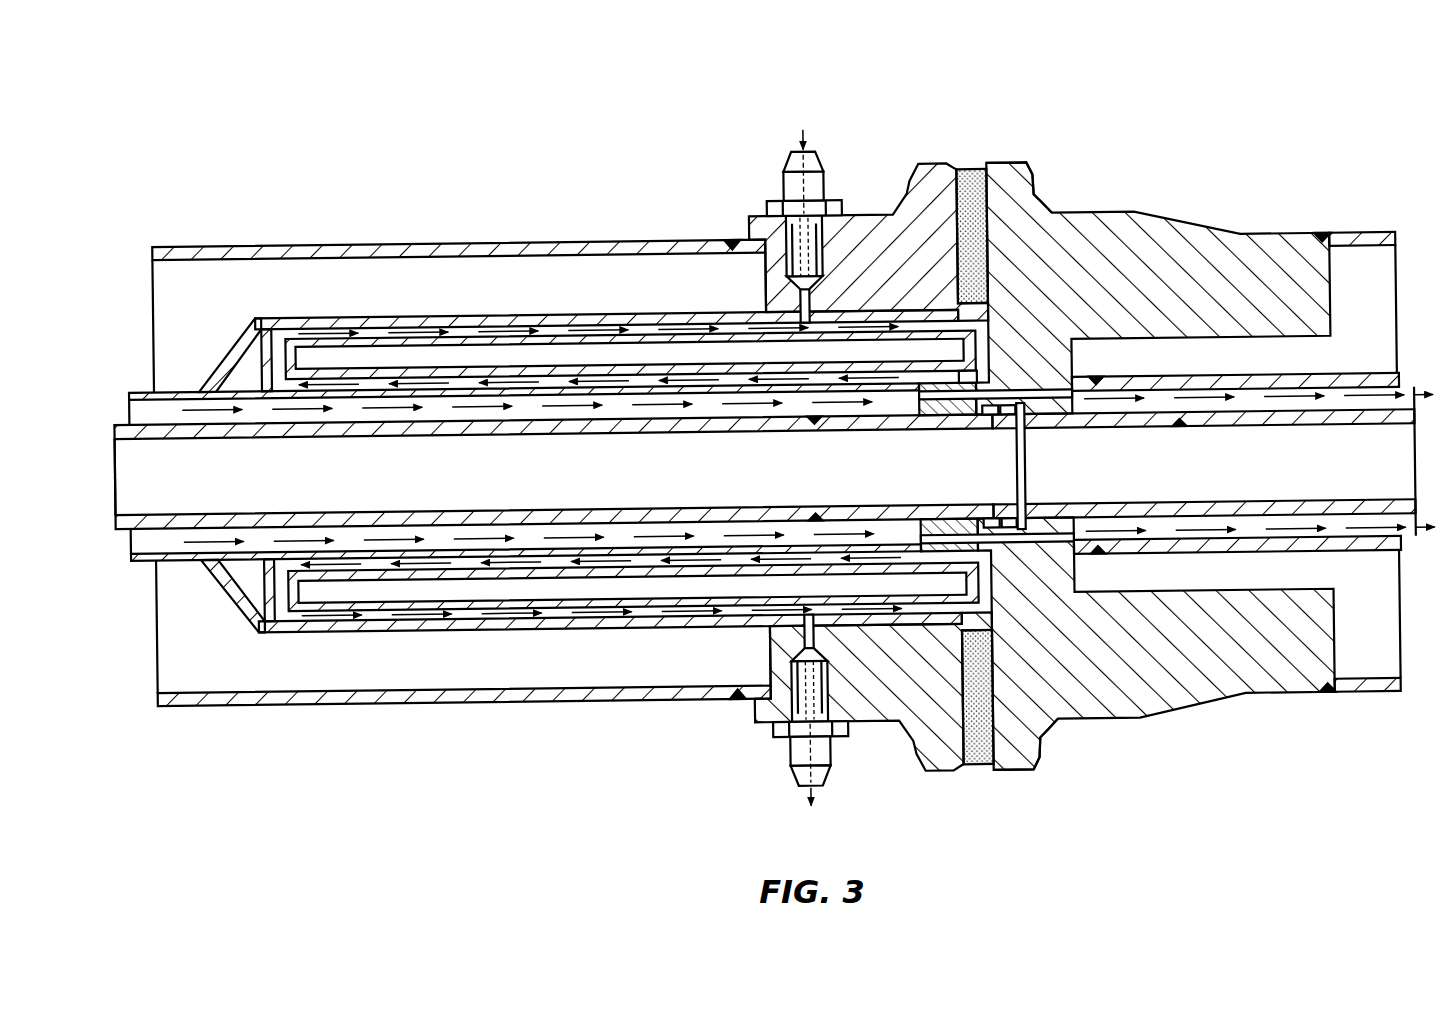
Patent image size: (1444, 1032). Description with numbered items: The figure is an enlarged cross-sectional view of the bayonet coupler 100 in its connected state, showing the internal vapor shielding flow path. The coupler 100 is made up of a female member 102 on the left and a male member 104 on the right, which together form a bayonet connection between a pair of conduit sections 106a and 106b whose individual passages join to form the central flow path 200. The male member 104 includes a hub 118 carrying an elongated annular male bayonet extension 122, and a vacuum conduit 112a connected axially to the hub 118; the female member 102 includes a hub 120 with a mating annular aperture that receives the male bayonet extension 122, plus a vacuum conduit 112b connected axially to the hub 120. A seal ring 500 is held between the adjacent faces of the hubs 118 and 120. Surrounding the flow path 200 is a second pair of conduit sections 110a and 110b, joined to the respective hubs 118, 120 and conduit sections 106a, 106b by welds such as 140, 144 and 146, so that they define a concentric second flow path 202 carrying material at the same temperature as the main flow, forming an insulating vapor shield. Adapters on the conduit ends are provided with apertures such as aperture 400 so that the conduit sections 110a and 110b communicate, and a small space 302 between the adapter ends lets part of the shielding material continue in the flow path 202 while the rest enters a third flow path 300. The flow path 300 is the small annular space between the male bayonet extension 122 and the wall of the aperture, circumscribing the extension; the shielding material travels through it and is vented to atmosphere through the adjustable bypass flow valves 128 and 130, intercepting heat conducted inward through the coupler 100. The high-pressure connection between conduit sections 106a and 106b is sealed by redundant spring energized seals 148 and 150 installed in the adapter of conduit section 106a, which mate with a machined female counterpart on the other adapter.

The bayonet coupler 100 is at (697, 94).
The female member 102 is at (489, 168).
The male member 104 is at (1204, 184).
The conduit section 106a is at (225, 431).
The conduit section 106b is at (1345, 431).
The conduit section 110a is at (200, 385).
The conduit section 110b is at (1375, 380).
The vacuum conduit 112a is at (1363, 239).
The vacuum conduit 112b is at (428, 237).
The hub 118 is at (1022, 165).
The hub 120 is at (924, 165).
The male bayonet extension 122 is at (432, 333).
The bypass flow valve 128 is at (787, 180).
The bypass flow valve 130 is at (787, 760).
The weld 140 is at (803, 432).
The weld 144 is at (1180, 431).
The weld 146 is at (1102, 383).
The spring energized seal 148 is at (987, 520).
The spring energized seal 150 is at (1007, 521).
The flow path 200 is at (549, 478).
The flow path 202 is at (355, 402).
The flow path 300 is at (397, 312).
The space 302 is at (990, 378).
The aperture 400 is at (932, 507).
The seal ring 500 is at (976, 171).